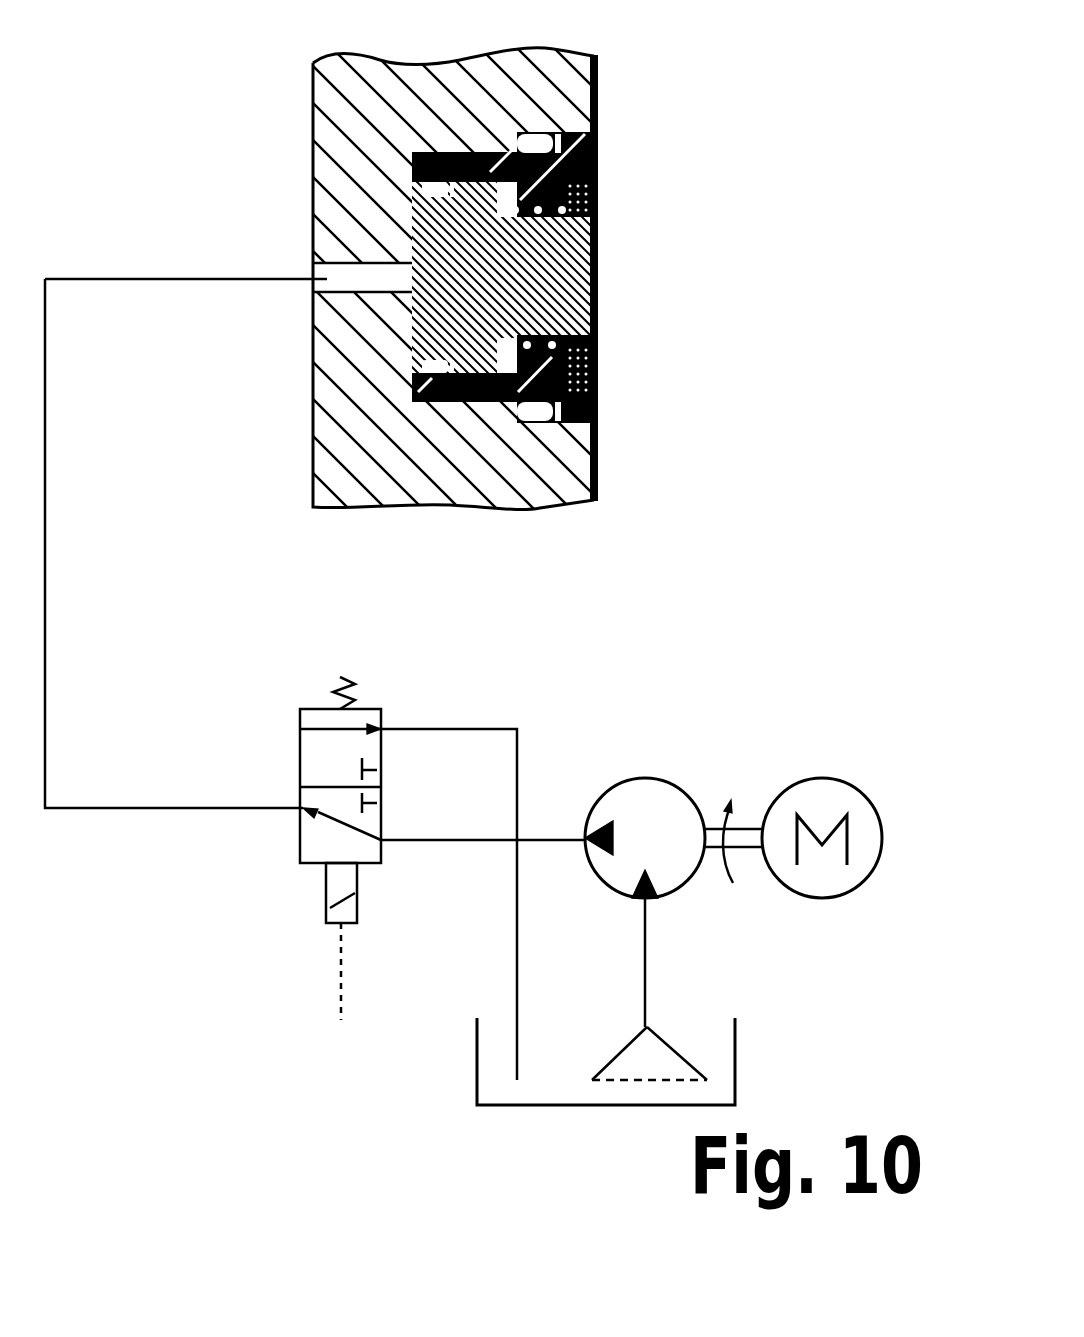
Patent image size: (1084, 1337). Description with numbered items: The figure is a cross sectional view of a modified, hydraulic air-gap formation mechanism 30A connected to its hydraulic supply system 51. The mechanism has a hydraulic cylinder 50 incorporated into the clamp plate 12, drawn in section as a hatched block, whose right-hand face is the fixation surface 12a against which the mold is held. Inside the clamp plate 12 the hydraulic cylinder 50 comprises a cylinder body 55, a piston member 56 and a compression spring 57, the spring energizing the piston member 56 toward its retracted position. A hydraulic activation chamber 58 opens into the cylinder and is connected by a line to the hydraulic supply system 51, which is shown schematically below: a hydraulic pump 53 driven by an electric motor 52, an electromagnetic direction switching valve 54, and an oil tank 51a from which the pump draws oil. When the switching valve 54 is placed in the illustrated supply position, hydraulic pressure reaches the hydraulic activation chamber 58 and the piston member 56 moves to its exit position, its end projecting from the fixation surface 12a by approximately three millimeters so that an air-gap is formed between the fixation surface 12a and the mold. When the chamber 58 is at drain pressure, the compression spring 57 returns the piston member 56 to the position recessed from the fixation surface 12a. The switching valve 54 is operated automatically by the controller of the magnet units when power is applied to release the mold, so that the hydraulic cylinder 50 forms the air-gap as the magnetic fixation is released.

The clamp plate 12 is at (312, 135).
The fixation surface 12a is at (598, 465).
The hydraulic air-gap formation mechanism 30A is at (612, 118).
The hydraulic cylinder 50 is at (572, 116).
The hydraulic supply system 51 is at (633, 700).
The oil tank 51a is at (735, 1050).
The electric motor 52 is at (847, 780).
The hydraulic pump 53 is at (657, 780).
The electromagnetic direction switching valve 54 is at (381, 709).
The cylinder body 55 is at (597, 178).
The piston member 56 is at (568, 267).
The compression spring 57 is at (597, 355).
The hydraulic activation chamber 58 is at (407, 226).